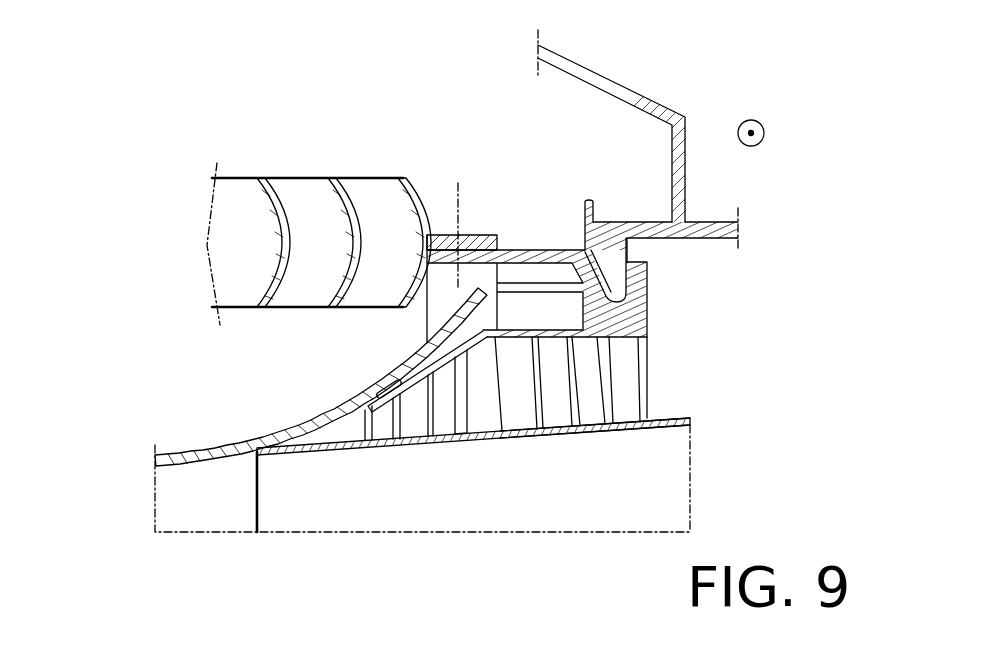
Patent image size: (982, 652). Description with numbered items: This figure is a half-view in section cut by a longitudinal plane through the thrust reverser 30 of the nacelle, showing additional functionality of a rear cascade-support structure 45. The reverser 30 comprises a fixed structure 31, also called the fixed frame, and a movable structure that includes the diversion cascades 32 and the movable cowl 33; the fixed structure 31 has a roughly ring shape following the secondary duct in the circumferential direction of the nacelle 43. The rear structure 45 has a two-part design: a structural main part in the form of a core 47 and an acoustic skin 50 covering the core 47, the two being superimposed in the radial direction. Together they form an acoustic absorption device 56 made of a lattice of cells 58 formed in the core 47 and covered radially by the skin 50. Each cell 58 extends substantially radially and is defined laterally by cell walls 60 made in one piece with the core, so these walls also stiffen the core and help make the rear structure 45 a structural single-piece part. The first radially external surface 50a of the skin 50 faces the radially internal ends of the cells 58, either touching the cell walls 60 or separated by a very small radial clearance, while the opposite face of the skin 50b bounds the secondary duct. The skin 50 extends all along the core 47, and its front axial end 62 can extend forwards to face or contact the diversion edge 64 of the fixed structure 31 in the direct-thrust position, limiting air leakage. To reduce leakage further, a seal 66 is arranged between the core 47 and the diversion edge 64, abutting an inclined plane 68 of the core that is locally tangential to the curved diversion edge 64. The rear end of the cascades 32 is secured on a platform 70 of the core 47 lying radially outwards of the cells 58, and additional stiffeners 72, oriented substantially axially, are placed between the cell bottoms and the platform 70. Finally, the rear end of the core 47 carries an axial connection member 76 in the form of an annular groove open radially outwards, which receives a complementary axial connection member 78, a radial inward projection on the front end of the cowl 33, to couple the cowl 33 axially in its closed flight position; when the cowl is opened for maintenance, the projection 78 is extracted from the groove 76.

The thrust reverser 30 is at (207, 90).
The fixed structure 31 is at (155, 487).
The diversion cascades 32 is at (300, 173).
The movable cowl 33 is at (668, 92).
The circumferential direction of the nacelle 43 is at (764, 128).
The rear structure 45 is at (755, 468).
The core 47 is at (662, 323).
The acoustic skin 50 is at (697, 422).
The first radially external surface 50a is at (665, 417).
The seal ring lower surface 50b is at (657, 433).
The acoustic absorption device 56 is at (497, 403).
The cells 58 is at (630, 412).
The cell walls 60 is at (460, 420).
The front axial end 62 is at (270, 452).
The diversion edge 64 is at (222, 445).
The seal 66 is at (400, 375).
The inclined plane 68 is at (415, 352).
The platform 70 is at (478, 235).
The additional stiffeners 72 is at (543, 290).
The axial connection member 76 is at (597, 277).
The complementary axial connection member 78 is at (613, 265).